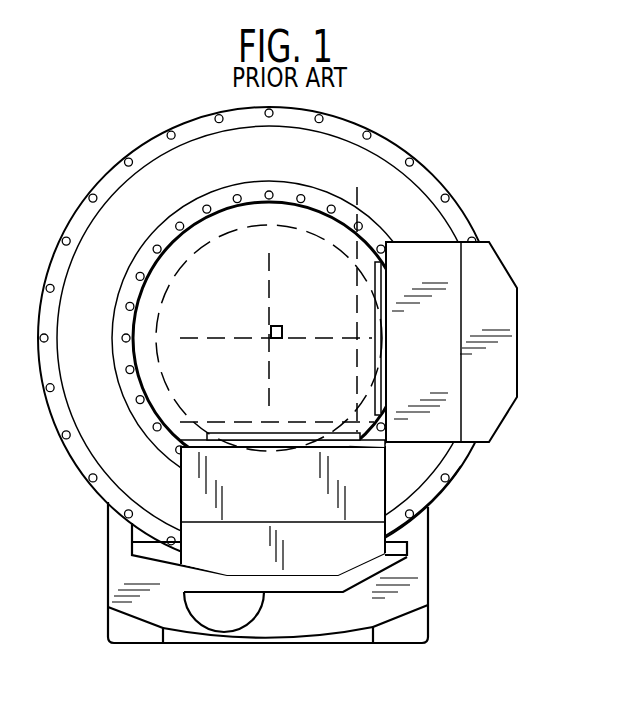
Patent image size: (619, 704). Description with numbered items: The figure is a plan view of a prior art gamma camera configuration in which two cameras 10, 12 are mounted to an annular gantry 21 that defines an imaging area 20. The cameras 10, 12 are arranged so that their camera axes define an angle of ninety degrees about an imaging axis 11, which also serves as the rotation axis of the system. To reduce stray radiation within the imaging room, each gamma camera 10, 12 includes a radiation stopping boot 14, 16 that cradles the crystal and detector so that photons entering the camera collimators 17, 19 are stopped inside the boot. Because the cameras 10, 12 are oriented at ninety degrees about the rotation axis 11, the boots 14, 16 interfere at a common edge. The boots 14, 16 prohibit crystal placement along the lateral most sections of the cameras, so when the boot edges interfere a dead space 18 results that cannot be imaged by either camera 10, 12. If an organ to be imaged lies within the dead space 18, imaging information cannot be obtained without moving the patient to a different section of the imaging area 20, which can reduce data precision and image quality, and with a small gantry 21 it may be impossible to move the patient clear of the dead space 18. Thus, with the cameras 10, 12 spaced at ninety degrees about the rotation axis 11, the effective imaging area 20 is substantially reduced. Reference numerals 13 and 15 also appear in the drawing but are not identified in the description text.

The camera 10 is at (420, 314).
The imaging axis 11 is at (271, 340).
The camera 12 is at (428, 506).
The center marker 13 is at (298, 338).
The radiation stopping boot 14 is at (438, 361).
The horizontal axis 15 is at (232, 338).
The radiation stopping boot 16 is at (288, 505).
The camera collimator 17 is at (376, 304).
The dead space 18 is at (392, 496).
The camera collimator 19 is at (250, 435).
The imaging area 20 is at (199, 240).
The annular gantry 21 is at (396, 142).